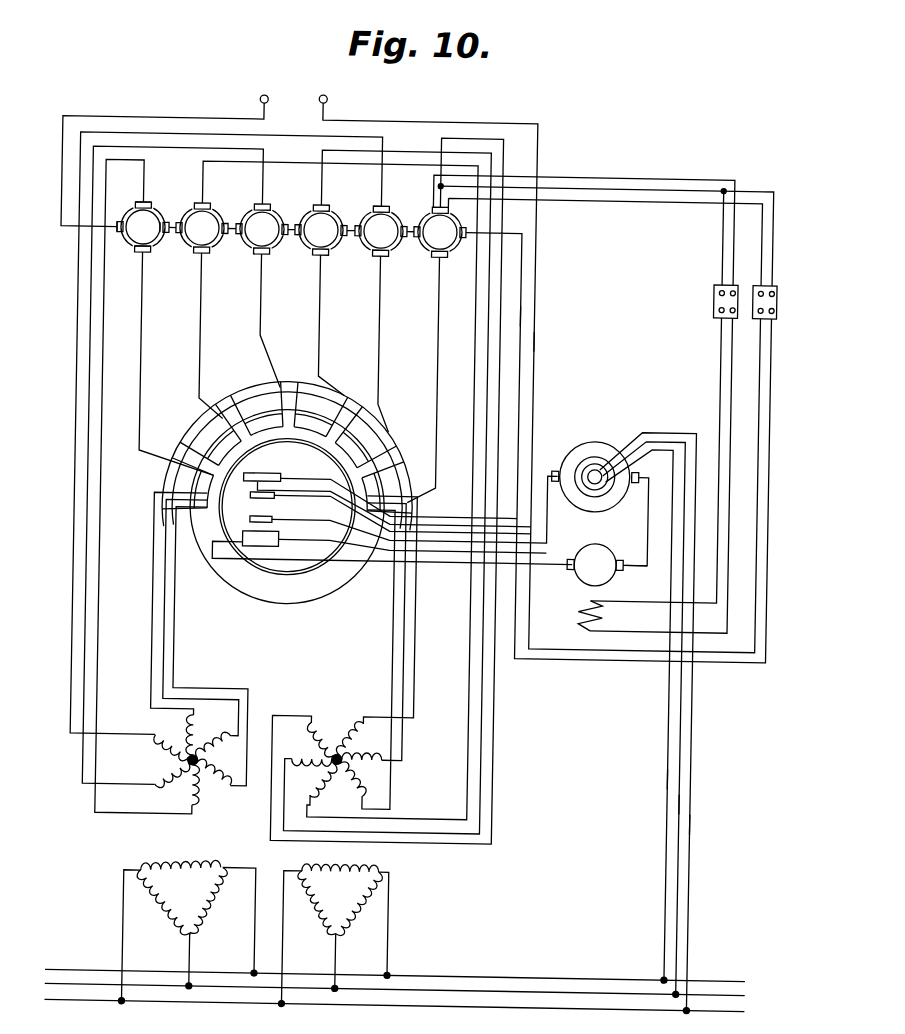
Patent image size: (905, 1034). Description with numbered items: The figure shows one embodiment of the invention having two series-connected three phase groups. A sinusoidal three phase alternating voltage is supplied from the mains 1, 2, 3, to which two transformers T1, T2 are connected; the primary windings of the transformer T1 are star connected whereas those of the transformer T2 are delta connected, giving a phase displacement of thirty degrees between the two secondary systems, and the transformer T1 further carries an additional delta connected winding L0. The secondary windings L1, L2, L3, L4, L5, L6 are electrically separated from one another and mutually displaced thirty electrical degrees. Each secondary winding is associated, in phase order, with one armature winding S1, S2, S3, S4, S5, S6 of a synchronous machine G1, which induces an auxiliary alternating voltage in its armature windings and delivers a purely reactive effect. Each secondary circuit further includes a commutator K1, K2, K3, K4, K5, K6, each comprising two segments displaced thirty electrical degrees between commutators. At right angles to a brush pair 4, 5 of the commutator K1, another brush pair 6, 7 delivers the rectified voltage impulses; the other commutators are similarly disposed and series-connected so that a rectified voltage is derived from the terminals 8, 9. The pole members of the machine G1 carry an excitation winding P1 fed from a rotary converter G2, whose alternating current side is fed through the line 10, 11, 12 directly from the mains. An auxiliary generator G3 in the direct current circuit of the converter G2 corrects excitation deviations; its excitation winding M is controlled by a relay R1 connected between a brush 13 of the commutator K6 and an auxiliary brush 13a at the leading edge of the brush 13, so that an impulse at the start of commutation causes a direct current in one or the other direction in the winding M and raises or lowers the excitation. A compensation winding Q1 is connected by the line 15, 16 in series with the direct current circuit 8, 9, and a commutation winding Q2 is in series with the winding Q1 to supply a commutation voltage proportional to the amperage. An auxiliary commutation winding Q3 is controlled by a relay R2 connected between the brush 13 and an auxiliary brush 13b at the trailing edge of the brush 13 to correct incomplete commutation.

The mains 1 is at (720, 1001).
The mains 2 is at (720, 985).
The mains 3 is at (720, 971).
The brush 4 is at (150, 206).
The brush 5 is at (136, 250).
The brush 6 is at (162, 236).
The brush 7 is at (118, 220).
The terminal 8 is at (165, 151).
The terminal 9 is at (536, 365).
The line 10 is at (678, 754).
The line 11 is at (692, 775).
The line 12 is at (701, 803).
The brush 13 is at (437, 183).
The auxiliary brush 13a is at (430, 206).
The auxiliary brush 13b is at (502, 213).
The line 15 is at (523, 311).
The line 16 is at (537, 336).
The commutator K1 is at (157, 486).
The commutator K2 is at (322, 490).
The commutator K3 is at (189, 466).
The commutator K4 is at (387, 492).
The commutator K5 is at (242, 435).
The commutator K6 is at (522, 491).
The armature winding S1 is at (196, 488).
The armature winding S2 is at (222, 442).
The armature winding S3 is at (266, 414).
The armature winding S4 is at (318, 414).
The armature winding S5 is at (362, 442).
The armature winding S6 is at (386, 488).
The compensation winding Q1 is at (274, 466).
The commutation winding Q2 is at (282, 494).
The auxiliary commutation winding Q3 is at (252, 517).
The excitation winding P1 is at (272, 540).
The synchronous machine G1 is at (332, 586).
The rotary converter G2 is at (596, 452).
The auxiliary generator G3 is at (597, 550).
The excitation winding M is at (585, 612).
The relay R1 is at (718, 290).
The relay R2 is at (774, 292).
The additional delta connected winding L0 is at (188, 924).
The secondary winding L1 is at (196, 736).
The secondary winding L2 is at (332, 724).
The secondary winding L3 is at (232, 744).
The secondary winding L4 is at (378, 754).
The secondary winding L5 is at (212, 784).
The secondary winding L6 is at (372, 780).
The transformer T1 is at (188, 918).
The transformer T2 is at (344, 930).